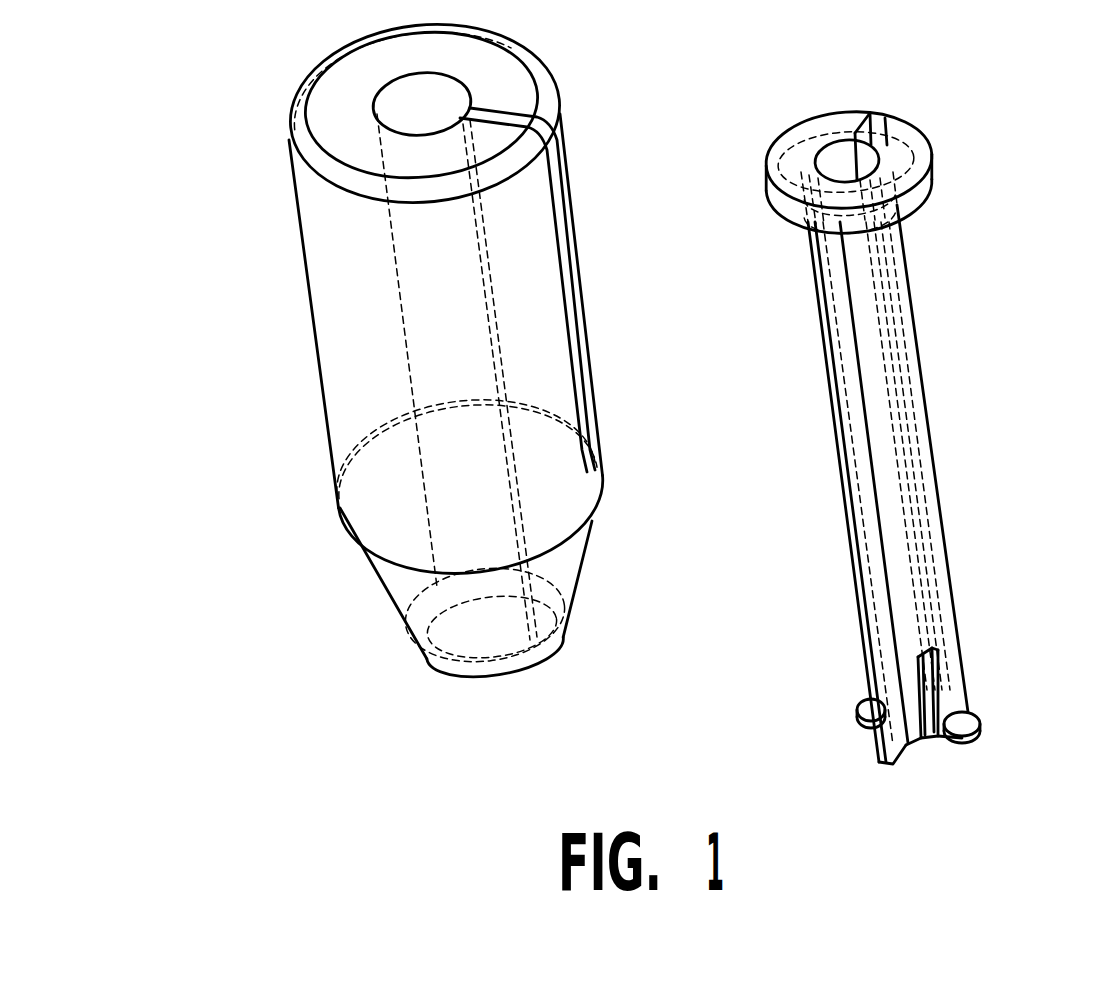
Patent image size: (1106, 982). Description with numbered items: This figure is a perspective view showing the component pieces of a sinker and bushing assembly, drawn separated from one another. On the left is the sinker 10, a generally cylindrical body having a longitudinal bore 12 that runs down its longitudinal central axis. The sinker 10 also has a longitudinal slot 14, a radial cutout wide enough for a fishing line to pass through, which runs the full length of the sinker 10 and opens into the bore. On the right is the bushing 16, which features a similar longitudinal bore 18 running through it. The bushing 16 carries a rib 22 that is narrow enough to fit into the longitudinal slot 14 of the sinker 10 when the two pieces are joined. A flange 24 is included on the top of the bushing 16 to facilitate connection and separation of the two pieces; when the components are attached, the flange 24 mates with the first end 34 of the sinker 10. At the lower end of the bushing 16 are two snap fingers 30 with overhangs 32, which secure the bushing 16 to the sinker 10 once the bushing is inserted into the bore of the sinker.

The sinker 10 is at (390, 354).
The longitudinal bore 12 is at (487, 325).
The longitudinal slot 14 is at (569, 290).
The bushing 16 is at (922, 467).
The longitudinal bore 18 is at (800, 128).
The rib 22 is at (840, 777).
The flange 24 is at (803, 180).
The snap fingers 30 is at (900, 686).
The overhangs 32 is at (972, 721).
The first end 34 is at (373, 113).